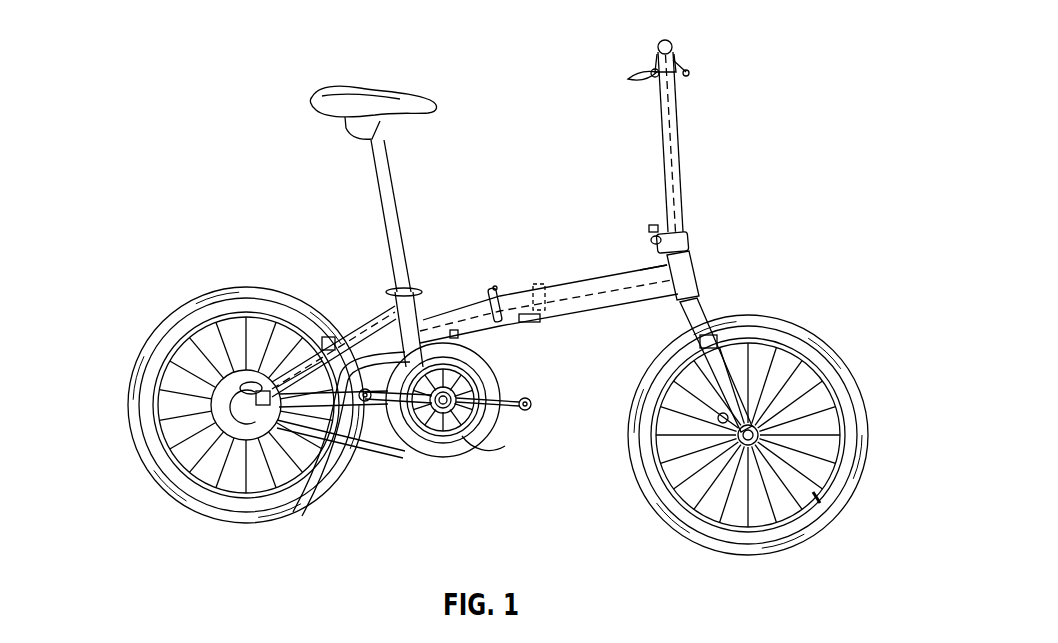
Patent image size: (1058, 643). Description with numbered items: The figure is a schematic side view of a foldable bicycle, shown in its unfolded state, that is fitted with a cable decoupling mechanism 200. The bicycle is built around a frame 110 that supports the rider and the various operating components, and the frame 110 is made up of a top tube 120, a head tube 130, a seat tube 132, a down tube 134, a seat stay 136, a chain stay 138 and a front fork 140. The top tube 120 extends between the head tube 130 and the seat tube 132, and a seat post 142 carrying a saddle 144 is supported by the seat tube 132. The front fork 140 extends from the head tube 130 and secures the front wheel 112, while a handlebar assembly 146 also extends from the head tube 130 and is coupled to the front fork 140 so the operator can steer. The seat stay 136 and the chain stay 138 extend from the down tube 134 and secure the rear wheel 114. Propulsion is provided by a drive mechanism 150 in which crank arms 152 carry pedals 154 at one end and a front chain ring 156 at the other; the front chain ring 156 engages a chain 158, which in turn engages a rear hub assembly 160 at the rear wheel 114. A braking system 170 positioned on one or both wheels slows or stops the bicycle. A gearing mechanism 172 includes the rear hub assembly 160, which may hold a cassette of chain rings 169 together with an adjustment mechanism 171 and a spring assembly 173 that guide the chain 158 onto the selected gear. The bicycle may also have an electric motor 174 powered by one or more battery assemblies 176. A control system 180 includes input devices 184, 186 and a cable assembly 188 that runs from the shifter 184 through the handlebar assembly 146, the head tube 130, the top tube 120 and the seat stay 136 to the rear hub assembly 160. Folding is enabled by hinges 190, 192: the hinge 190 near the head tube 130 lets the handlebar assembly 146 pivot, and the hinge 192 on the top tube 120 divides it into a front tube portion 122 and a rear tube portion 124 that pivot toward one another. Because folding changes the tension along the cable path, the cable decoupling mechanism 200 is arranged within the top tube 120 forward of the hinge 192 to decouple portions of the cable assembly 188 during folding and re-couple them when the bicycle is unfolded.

The frame 110 is at (624, 307).
The front wheel 112 is at (824, 355).
The rear wheel 114 is at (130, 368).
The top tube 120 is at (588, 278).
The front tube portion 122 is at (528, 292).
The rear tube portion 124 is at (468, 296).
The head tube 130 is at (700, 276).
The seat tube 132 is at (421, 306).
The down tube 134 is at (512, 323).
The seat stay 136 is at (336, 337).
The chain stay 138 is at (333, 476).
The front fork 140 is at (700, 305).
The seat post 142 is at (397, 186).
The saddle 144 is at (376, 88).
The handlebar assembly 146 is at (685, 156).
The drive mechanism 150 is at (434, 463).
The crank arms 152 is at (403, 447).
The pedals 154 is at (368, 388).
The front chain ring 156 is at (416, 452).
The chain 158 is at (303, 474).
The rear hub assembly 160 is at (238, 372).
The chain rings 169 is at (155, 448).
The braking system 170 is at (312, 309).
The adjustment mechanism 171 is at (257, 430).
The gearing mechanism 172 is at (458, 480).
The spring assembly 173 is at (214, 409).
The electric motor 174 is at (452, 408).
The battery assemblies 176 is at (460, 338).
The control system 180 is at (690, 60).
The input device 184 is at (645, 72).
The input device 186 is at (688, 75).
The cable assembly 188 is at (647, 272).
The hinge 190 is at (690, 240).
The hinge 192 is at (495, 288).
The cable decoupling mechanism 200 is at (578, 294).